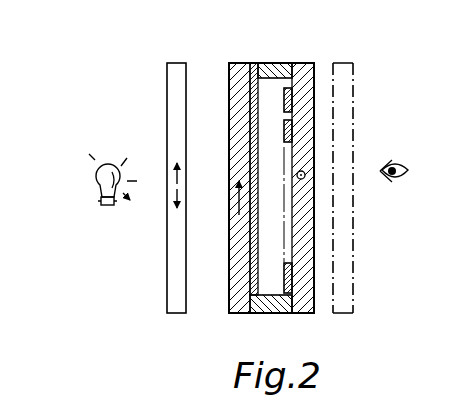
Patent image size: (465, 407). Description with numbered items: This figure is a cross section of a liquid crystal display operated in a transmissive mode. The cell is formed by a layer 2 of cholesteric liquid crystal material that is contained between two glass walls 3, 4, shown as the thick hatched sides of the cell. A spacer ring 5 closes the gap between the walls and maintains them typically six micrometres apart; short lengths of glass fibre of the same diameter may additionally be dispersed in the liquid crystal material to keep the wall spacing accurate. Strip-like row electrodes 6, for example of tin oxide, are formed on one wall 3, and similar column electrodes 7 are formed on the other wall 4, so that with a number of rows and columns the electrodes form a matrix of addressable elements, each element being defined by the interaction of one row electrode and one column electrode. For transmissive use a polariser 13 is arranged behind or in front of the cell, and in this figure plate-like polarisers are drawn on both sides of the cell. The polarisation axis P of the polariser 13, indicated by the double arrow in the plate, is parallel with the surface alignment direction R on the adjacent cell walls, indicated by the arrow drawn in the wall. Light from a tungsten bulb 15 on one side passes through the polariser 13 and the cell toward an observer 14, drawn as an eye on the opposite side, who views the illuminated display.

The layer of cholesteric liquid crystal material 2 is at (272, 292).
The glass wall 3 is at (300, 300).
The glass wall 4 is at (238, 63).
The spacer ring 5 is at (276, 63).
The row electrodes 6 is at (283, 88).
The column electrodes 7 is at (255, 63).
The polariser 13 is at (182, 62).
The observer 14 is at (399, 168).
The tungsten bulb 15 is at (108, 206).
The polarisation axis P is at (179, 185).
The surface alignment direction R is at (237, 199).